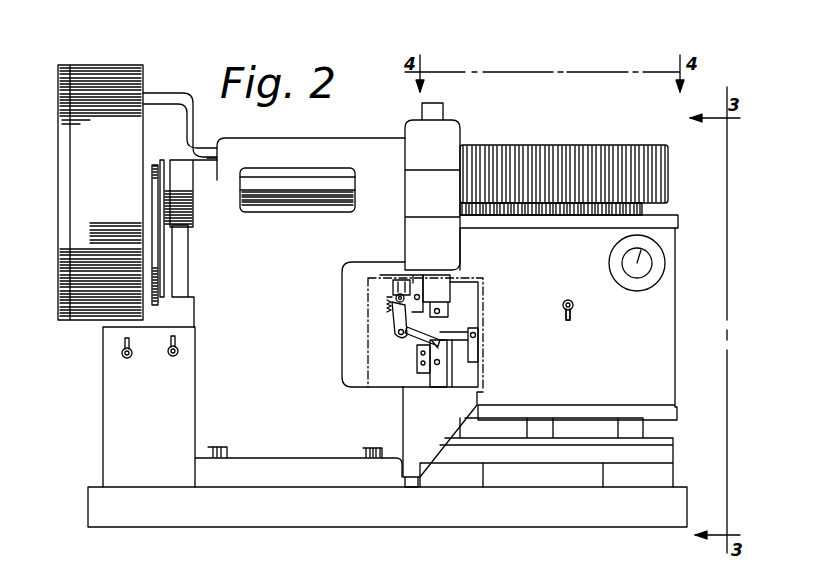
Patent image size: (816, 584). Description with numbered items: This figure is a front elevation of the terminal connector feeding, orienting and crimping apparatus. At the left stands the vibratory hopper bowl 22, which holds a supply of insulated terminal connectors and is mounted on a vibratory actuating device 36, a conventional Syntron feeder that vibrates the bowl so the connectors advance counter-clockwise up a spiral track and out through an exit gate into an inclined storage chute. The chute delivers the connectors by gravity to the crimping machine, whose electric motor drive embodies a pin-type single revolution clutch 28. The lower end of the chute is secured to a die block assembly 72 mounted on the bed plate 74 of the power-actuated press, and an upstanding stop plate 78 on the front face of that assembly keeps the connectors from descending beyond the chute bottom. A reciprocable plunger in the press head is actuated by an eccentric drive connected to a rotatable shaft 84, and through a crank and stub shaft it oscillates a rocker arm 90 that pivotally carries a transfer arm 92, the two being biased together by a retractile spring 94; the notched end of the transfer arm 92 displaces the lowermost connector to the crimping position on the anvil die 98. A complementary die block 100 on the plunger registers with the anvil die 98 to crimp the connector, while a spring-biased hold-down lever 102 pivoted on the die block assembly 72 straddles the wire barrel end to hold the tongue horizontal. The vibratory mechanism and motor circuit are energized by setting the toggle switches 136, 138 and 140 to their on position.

The vibratory hopper bowl 22 is at (661, 183).
The single revolution clutch 28 is at (157, 263).
The vibratory actuating device 36 is at (582, 302).
The die block assembly 72 is at (470, 378).
The bed plate 74 is at (406, 436).
The stop plate 78 is at (418, 365).
The rotatable shaft 84 is at (283, 183).
The rocker arm 90 is at (398, 318).
The transfer arm 92 is at (410, 345).
The retractile spring 94 is at (388, 303).
The anvil die 98 is at (442, 348).
The complementary die block 100 is at (447, 318).
The hold-down lever 102 is at (465, 332).
The toggle switch 136 is at (571, 316).
The toggle switch 138 is at (121, 351).
The toggle switch 140 is at (179, 348).